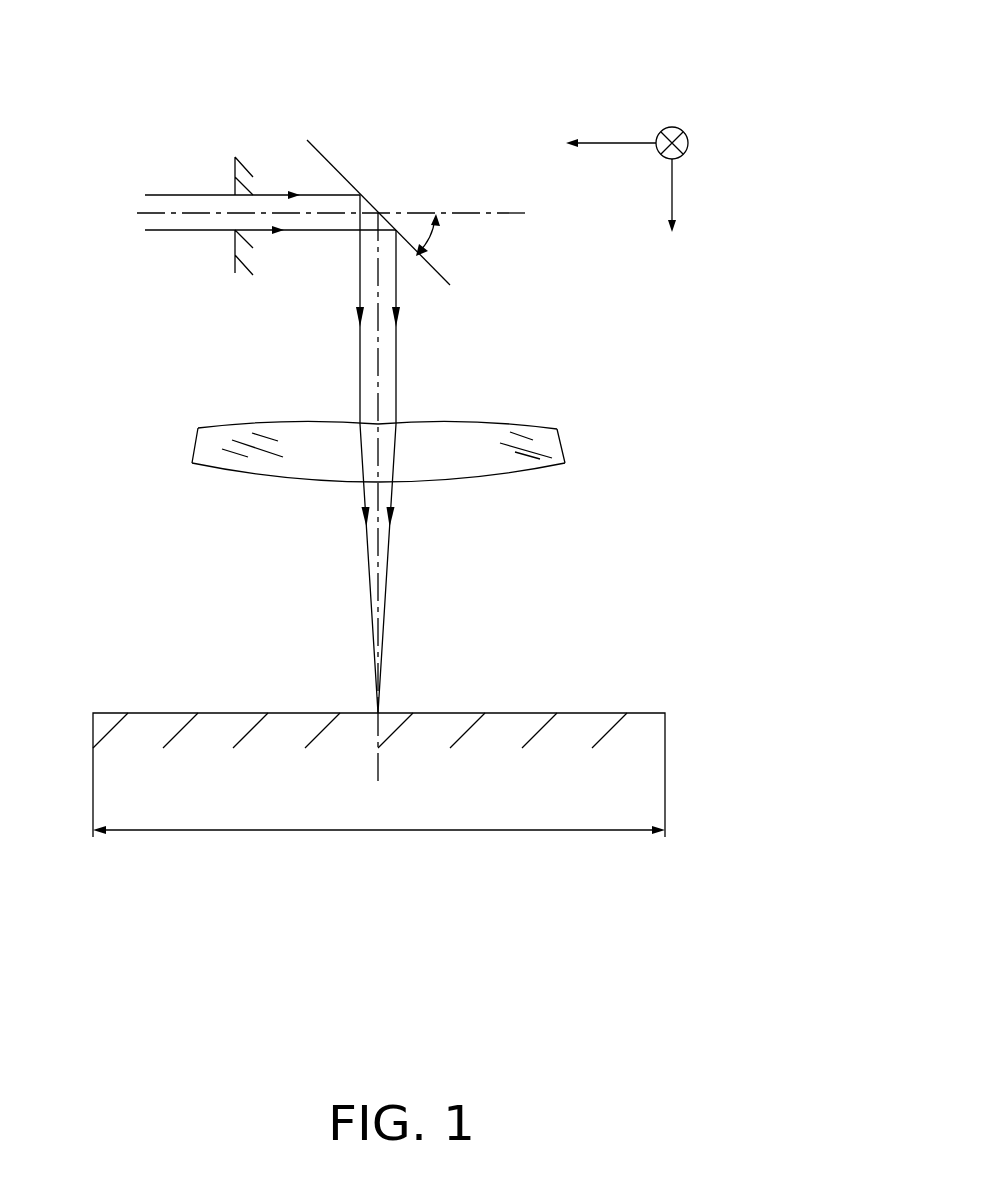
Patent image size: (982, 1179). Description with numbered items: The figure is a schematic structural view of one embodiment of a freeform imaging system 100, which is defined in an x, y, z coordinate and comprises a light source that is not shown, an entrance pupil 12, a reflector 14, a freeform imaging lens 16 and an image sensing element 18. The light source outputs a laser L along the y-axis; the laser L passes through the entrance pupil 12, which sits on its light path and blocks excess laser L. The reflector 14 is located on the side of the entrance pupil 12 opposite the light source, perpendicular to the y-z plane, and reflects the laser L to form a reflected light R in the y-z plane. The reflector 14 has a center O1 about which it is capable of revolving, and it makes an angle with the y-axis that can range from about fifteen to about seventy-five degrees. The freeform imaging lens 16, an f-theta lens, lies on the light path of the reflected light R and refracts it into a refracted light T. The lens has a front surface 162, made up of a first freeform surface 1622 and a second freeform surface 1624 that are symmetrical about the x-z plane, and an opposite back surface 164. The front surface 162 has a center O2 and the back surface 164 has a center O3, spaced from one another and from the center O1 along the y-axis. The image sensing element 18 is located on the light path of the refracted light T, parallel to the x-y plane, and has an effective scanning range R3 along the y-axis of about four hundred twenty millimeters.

The freeform imaging system 100 is at (347, 31).
The entrance pupil 12 is at (234, 166).
The laser L is at (175, 230).
The reflector 14 is at (333, 157).
The center of the reflector O1 is at (378, 208).
The reflected light R is at (398, 350).
The refracted light T is at (367, 573).
The center of the front surface O2 is at (378, 425).
The center of the back surface O3 is at (377, 483).
The freeform imaging lens 16 is at (402, 444).
The front surface 162 is at (377, 392).
The first freeform surface 1622 is at (230, 422).
The second freeform surface 1624 is at (435, 422).
The back surface 164 is at (412, 498).
The image sensing element 18 is at (600, 713).
The effective scanning range R3 is at (379, 818).